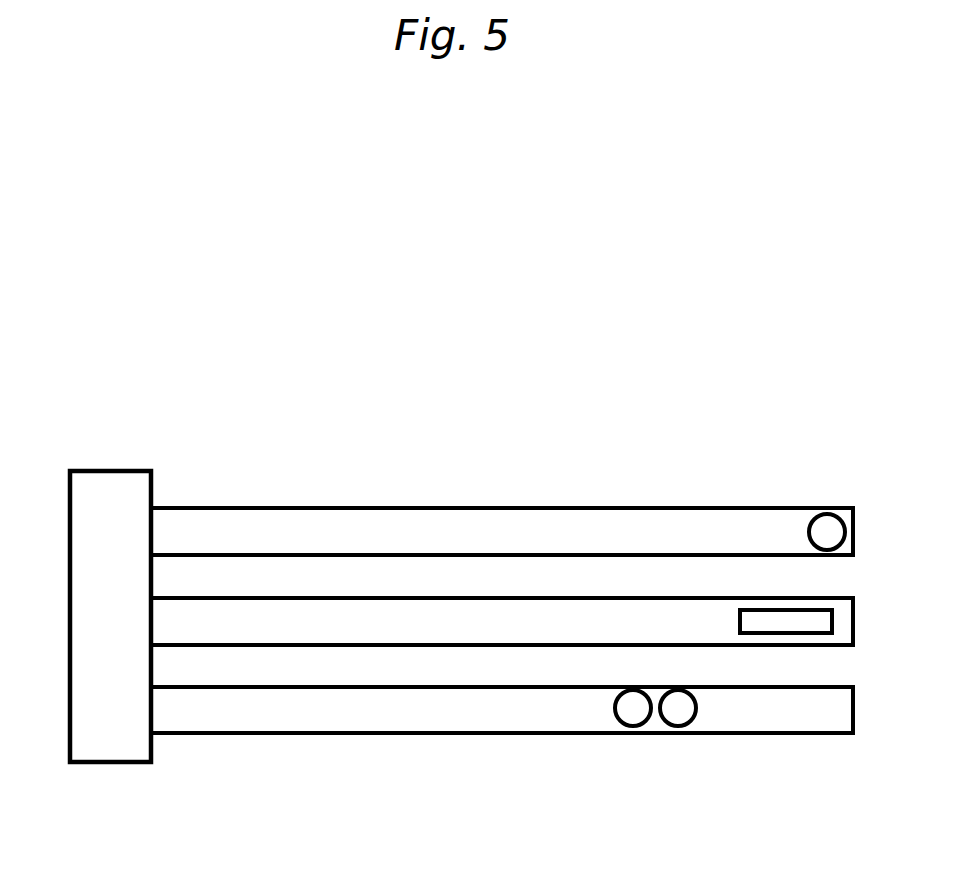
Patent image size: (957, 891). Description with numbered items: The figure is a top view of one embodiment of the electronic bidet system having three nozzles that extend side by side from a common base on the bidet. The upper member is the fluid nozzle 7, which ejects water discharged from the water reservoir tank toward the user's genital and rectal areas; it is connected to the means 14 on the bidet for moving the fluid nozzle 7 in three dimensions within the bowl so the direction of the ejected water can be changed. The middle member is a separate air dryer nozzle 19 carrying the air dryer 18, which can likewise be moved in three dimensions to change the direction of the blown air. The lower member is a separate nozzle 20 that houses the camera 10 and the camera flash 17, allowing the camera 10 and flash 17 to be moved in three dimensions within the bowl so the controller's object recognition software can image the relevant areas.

The fluid nozzle 7 is at (823, 533).
The camera 10 is at (678, 712).
The means for moving the nozzle 14 is at (234, 533).
The camera flash 17 is at (623, 712).
The air dryer 18 is at (763, 610).
The air dryer nozzle 19 is at (363, 610).
The nozzle 20 is at (403, 723).